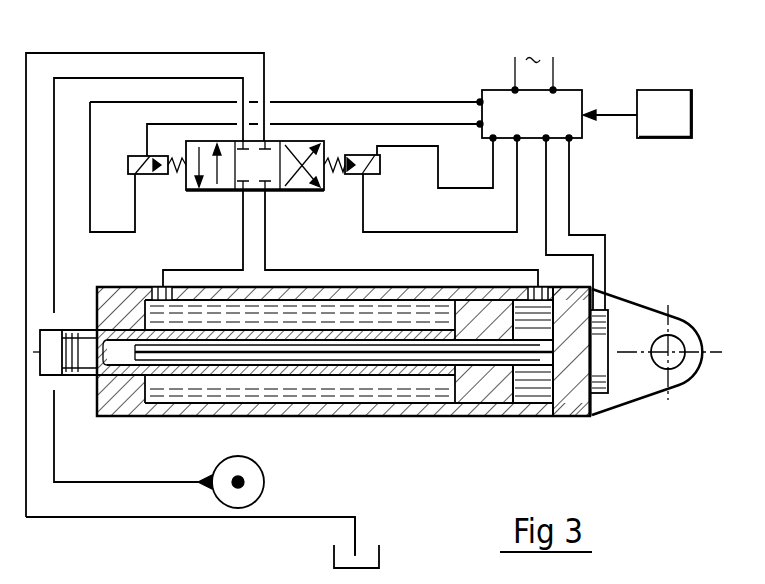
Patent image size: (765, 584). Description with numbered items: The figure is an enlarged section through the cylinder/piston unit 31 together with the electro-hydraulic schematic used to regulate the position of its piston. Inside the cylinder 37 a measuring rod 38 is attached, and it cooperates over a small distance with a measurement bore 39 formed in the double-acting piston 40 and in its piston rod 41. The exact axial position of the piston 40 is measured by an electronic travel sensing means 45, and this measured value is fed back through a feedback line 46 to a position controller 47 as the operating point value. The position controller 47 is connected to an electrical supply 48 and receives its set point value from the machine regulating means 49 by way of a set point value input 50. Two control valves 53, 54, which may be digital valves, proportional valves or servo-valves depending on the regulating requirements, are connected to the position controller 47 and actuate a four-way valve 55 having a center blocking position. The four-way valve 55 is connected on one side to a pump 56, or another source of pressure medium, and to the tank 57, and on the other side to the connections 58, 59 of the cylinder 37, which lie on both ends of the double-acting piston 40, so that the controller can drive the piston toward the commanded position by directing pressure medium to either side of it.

The cylinder/piston unit 31 is at (548, 422).
The cylinder 37 is at (338, 418).
The measuring rod 38 is at (400, 352).
The measurement bore 39 is at (118, 355).
The double-acting piston 40 is at (480, 390).
The piston rod 41 is at (185, 368).
The electronic travel sensing means 45 is at (603, 398).
The feedback line 46 is at (570, 200).
The position controller 47 is at (560, 105).
The electrical supply 48 is at (525, 48).
The machine regulating means 49 is at (685, 112).
The set point value input 50 is at (603, 113).
The control valve 53 is at (377, 174).
The control valve 54 is at (143, 175).
The four-way valve 55 is at (277, 192).
The pump 56 is at (258, 465).
The tank 57 is at (380, 550).
The connection 58 is at (552, 265).
The connection 59 is at (160, 287).